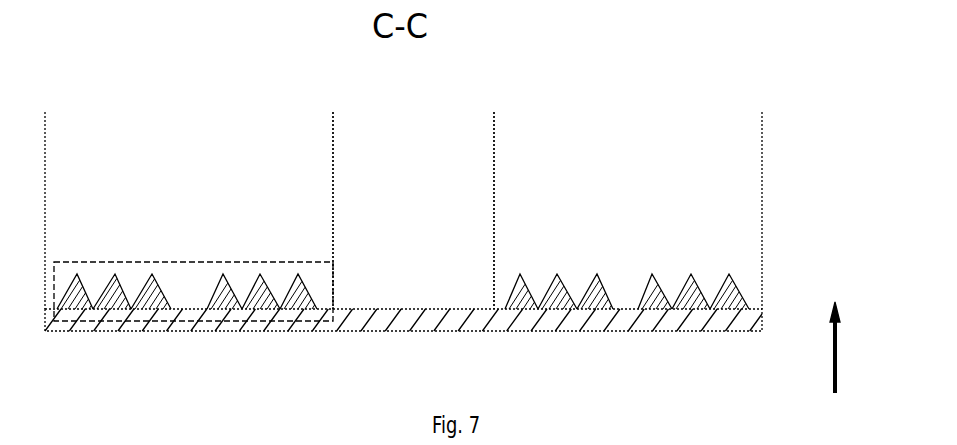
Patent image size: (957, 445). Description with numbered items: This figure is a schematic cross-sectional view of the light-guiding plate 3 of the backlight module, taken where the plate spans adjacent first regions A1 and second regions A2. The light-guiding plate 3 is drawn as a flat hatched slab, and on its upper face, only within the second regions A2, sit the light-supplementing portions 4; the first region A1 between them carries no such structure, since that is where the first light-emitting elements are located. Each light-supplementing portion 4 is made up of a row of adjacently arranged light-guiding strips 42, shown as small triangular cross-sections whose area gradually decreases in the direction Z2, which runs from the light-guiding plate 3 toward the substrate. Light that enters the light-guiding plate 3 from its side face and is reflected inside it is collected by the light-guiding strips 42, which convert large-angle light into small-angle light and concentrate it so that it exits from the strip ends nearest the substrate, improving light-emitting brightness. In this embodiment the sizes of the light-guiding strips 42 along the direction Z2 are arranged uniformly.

The light-guiding plate 3 is at (749, 310).
The light-supplementing portion 4 is at (193, 262).
The light-guiding strip 42 is at (78, 274).
The first region A1 is at (413, 199).
The second region A2 is at (403, 199).
The direction Z2 is at (859, 347).